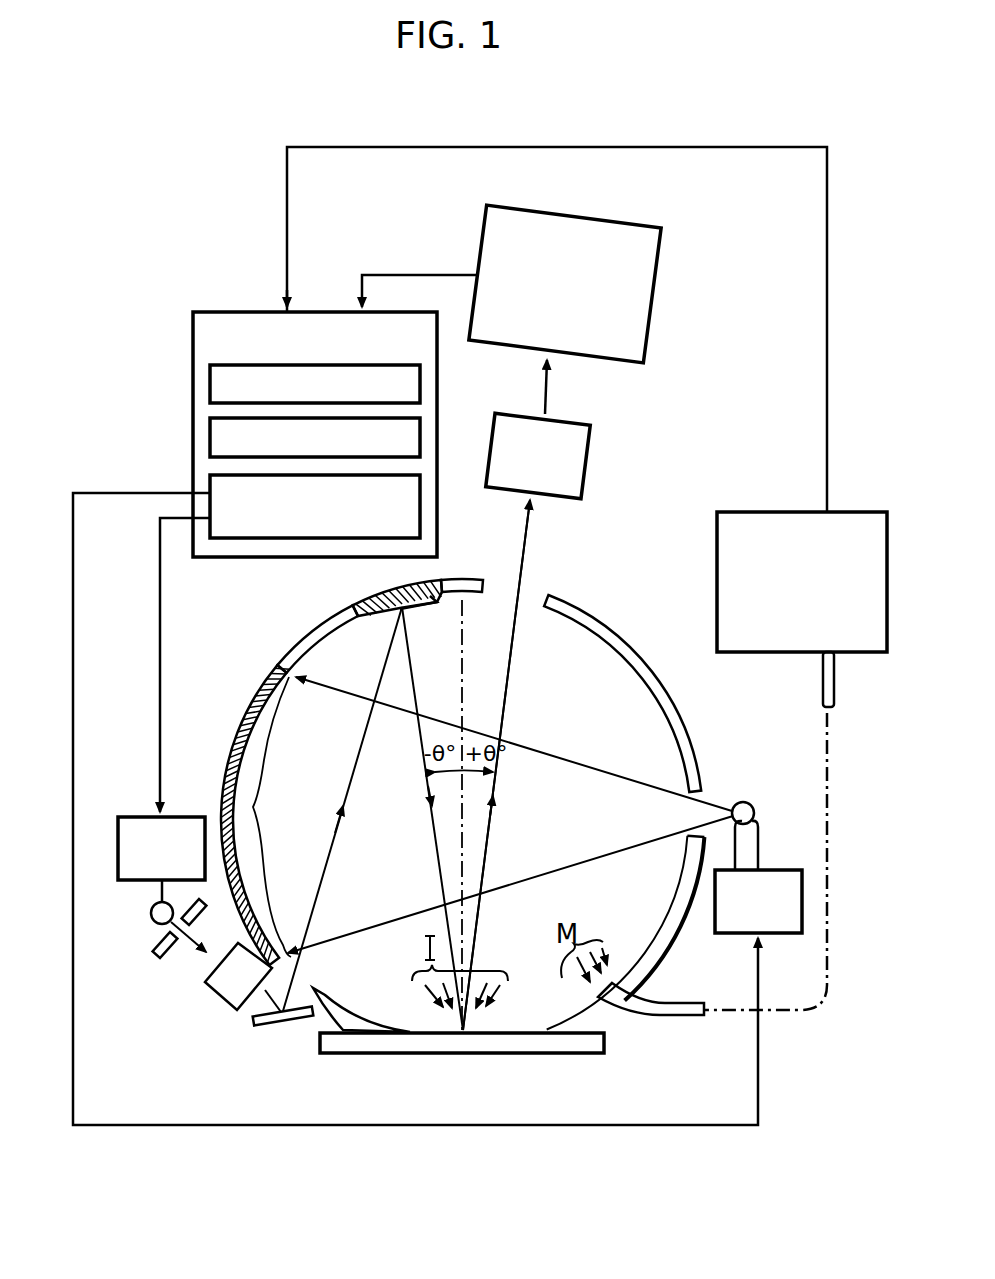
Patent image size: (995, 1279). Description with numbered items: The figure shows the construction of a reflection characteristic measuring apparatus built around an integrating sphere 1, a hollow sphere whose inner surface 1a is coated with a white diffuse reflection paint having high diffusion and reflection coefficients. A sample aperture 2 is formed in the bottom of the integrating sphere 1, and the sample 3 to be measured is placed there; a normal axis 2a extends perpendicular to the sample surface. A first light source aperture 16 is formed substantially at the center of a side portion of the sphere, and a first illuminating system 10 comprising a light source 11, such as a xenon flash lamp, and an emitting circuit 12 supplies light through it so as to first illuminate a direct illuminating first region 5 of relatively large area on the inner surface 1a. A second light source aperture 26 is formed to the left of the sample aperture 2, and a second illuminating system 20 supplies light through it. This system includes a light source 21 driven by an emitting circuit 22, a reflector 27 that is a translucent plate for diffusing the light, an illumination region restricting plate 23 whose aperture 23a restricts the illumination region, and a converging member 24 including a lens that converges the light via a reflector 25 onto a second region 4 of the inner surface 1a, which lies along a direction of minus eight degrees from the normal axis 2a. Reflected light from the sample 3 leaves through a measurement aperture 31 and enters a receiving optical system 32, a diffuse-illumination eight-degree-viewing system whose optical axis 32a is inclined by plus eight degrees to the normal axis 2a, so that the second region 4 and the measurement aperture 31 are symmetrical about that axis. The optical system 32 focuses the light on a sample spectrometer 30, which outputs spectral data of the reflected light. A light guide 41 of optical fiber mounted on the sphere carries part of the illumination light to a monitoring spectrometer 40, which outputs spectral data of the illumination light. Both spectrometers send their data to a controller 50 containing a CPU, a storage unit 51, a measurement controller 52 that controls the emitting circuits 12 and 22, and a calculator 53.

The integrating sphere 1 is at (624, 647).
The inner surface 1a is at (640, 684).
The sample aperture 2 is at (510, 1030).
The normal axis 2a is at (467, 853).
The sample 3 is at (545, 1045).
The second region 4 is at (418, 622).
The first region 5 is at (272, 817).
The first illuminating system 10 is at (724, 786).
The light source 11 is at (736, 830).
The emitting circuit 12 is at (766, 940).
The first light source aperture 16 is at (700, 812).
The second illuminating system 20 is at (205, 928).
The light source 21 is at (151, 909).
The emitting circuit 22 is at (150, 815).
The illumination region restricting plate 23 is at (178, 934).
The aperture 23a is at (188, 948).
The converging member 24 is at (222, 987).
The reflector 25 is at (262, 1027).
The second light source aperture 26 is at (300, 983).
The reflector 27 is at (160, 930).
The sample spectrometer 30 is at (614, 218).
The measurement aperture 31 is at (516, 765).
The receiving optical system 32 is at (586, 447).
The optical axis 32a is at (515, 668).
The monitoring spectrometer 40 is at (852, 512).
The light guide 41 is at (834, 670).
The controller 50 is at (199, 312).
The storage unit 51 is at (210, 436).
The measurement controller 52 is at (210, 487).
The calculator 53 is at (210, 383).